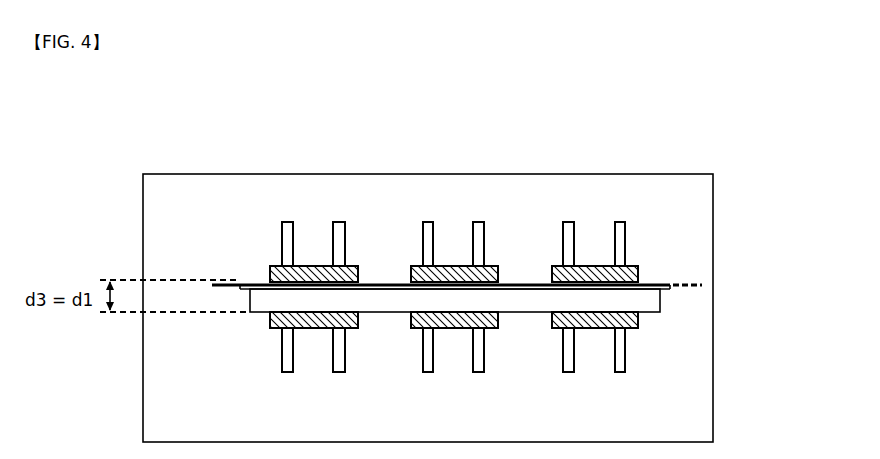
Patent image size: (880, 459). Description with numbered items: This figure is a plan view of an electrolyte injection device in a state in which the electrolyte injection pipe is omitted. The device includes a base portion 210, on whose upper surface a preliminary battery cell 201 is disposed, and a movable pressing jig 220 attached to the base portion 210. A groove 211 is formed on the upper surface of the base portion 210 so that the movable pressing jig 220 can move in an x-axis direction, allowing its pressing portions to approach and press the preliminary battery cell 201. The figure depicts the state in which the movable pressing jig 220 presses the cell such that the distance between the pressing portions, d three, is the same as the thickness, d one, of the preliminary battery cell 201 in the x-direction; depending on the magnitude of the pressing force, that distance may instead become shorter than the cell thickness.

The preliminary battery cell 201 is at (706, 296).
The base portion 210 is at (692, 402).
The groove 211 is at (568, 222).
The movable pressing jig 220 is at (632, 266).